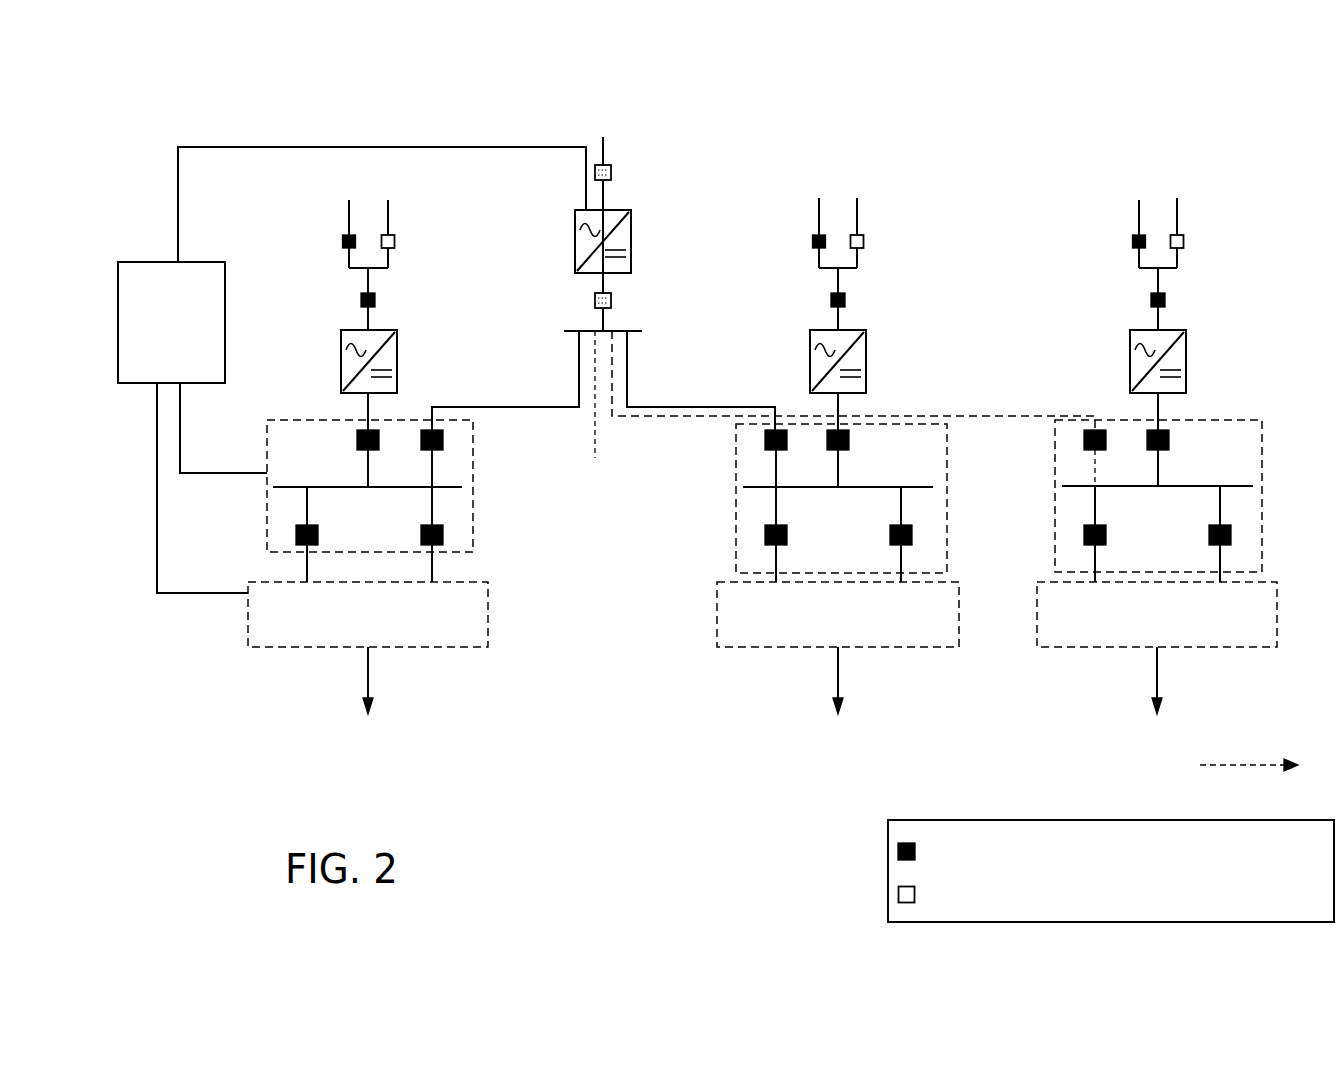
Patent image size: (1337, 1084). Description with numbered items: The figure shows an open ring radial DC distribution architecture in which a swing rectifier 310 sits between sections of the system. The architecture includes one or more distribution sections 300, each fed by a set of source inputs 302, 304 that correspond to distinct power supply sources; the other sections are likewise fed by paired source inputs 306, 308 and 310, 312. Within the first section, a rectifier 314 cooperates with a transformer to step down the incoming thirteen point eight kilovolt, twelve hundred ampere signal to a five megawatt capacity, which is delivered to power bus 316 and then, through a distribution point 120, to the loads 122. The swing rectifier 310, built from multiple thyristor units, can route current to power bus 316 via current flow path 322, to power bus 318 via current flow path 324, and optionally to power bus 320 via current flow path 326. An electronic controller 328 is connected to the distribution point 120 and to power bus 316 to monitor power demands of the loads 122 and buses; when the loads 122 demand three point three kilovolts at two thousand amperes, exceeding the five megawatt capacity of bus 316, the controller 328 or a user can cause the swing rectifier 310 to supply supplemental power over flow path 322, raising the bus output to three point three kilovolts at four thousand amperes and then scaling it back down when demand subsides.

The distribution section 300 is at (316, 46).
The source input 302 is at (287, 200).
The source input 304 is at (447, 202).
The first power source 306 is at (757, 200).
The second power source 308 is at (898, 202).
The swing rectifier 310 is at (620, 273).
The second power source 312 is at (1243, 216).
The rectifier 314 is at (342, 330).
The power bus 316 is at (473, 453).
The power bus 318 is at (947, 462).
The power bus 320 is at (1262, 424).
The current flow path 322 is at (470, 407).
The current flow path 324 is at (686, 407).
The current flow path 326 is at (933, 416).
The electronic controller 328 is at (188, 348).
The distribution point 120 is at (248, 618).
The loads 122 is at (430, 698).